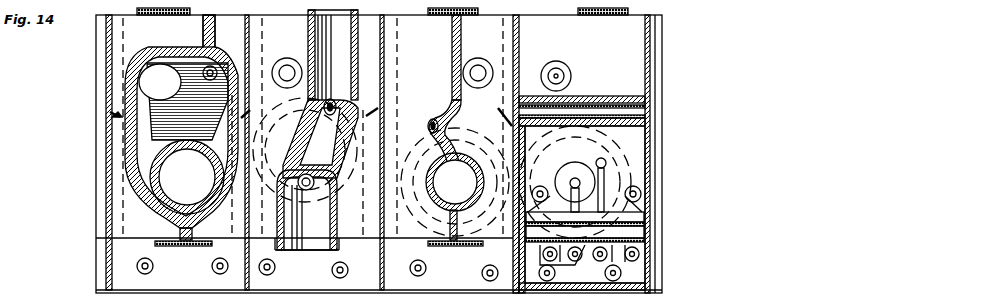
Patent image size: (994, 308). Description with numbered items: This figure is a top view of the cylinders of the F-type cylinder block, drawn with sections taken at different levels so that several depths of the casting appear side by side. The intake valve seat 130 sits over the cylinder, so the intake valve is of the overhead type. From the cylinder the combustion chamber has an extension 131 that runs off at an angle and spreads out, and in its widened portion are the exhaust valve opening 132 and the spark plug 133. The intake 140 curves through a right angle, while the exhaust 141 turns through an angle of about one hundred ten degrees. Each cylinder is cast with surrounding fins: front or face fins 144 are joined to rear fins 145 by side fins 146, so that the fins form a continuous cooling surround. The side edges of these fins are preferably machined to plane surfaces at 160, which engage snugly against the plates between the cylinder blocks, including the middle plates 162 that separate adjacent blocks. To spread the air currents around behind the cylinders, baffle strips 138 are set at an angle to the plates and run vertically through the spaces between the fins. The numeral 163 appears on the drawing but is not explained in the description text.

The intake valve seat 130 is at (212, 180).
The combustion chamber extension 131 is at (181, 127).
The exhaust valve opening 132 is at (160, 82).
The spark plug 133 is at (597, 66).
The baffle strips 138 is at (118, 115).
The intake 140 is at (305, 250).
The exhaust 141 is at (320, 94).
The front or face fins 144 is at (150, 240).
The rear fins 145 is at (290, 33).
The side fins 146 is at (120, 146).
The plane surfaces 160 is at (113, 207).
The middle plates 162 is at (385, 71).
The mechanism housing 163 is at (650, 226).